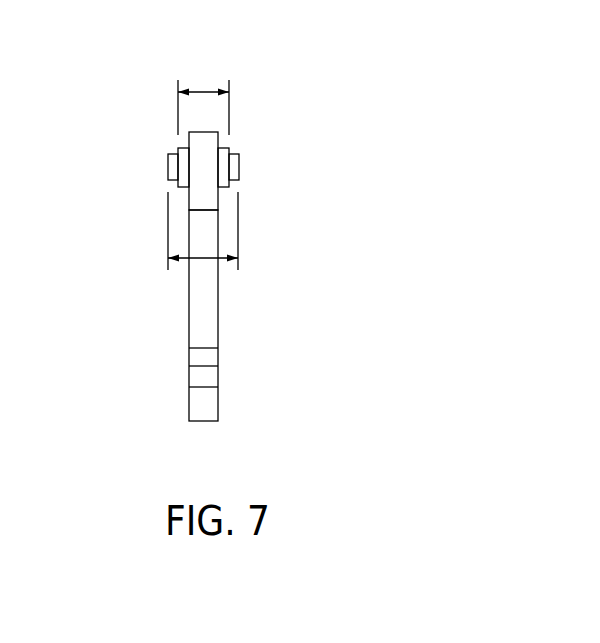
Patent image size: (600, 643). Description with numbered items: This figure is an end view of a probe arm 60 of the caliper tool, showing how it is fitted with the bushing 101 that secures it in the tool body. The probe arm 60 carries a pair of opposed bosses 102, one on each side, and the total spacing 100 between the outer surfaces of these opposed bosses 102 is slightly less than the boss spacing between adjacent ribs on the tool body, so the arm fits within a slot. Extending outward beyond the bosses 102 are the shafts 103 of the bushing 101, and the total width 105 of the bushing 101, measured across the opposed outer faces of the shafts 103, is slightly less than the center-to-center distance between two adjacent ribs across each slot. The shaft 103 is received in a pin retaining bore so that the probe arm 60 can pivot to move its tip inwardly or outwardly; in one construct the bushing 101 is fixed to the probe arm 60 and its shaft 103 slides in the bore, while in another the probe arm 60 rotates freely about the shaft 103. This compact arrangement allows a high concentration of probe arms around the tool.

The total spacing 100 is at (202, 90).
The bushing 101 is at (242, 135).
The bosses 102 is at (229, 183).
The shaft 103 is at (240, 162).
The total width 105 is at (202, 259).
The probe arm 60 is at (233, 318).